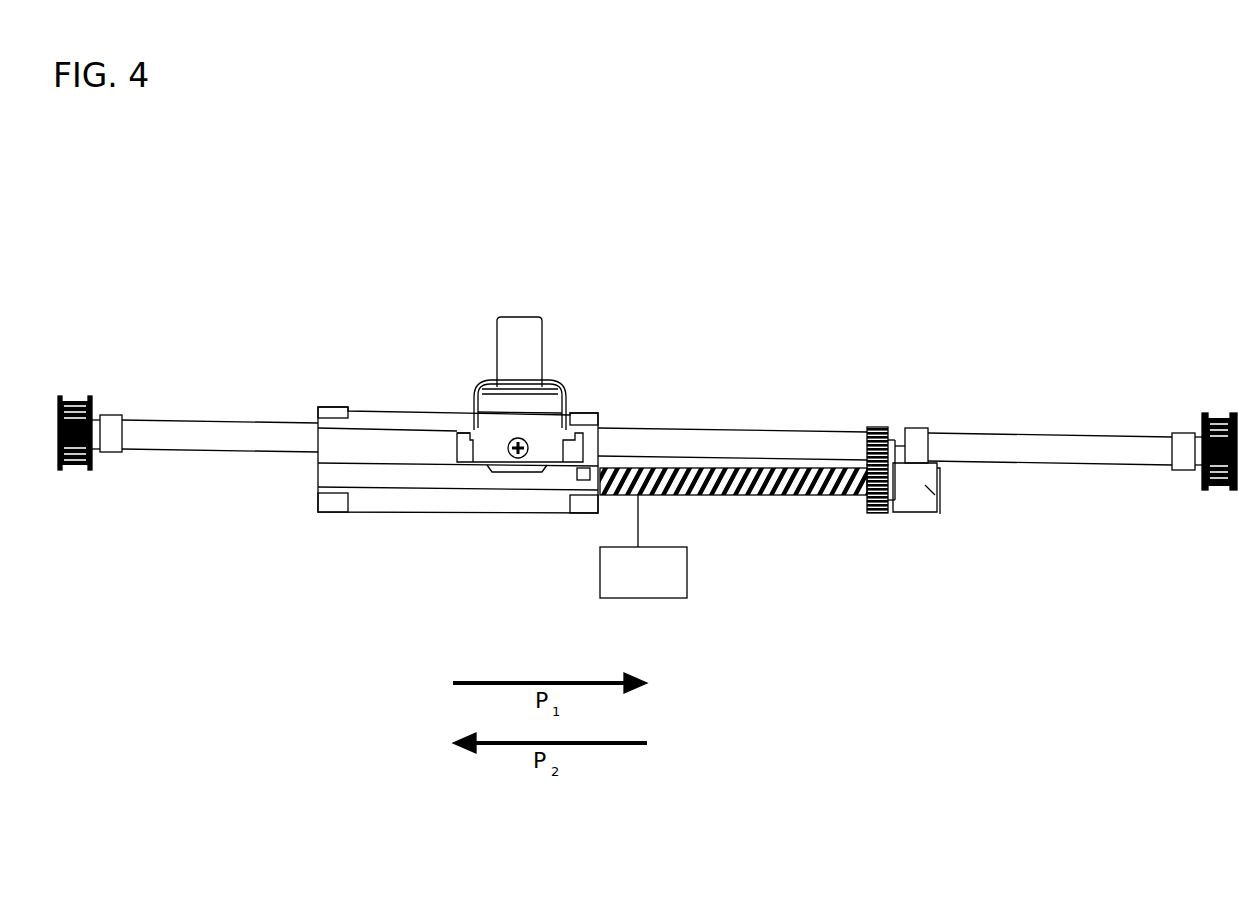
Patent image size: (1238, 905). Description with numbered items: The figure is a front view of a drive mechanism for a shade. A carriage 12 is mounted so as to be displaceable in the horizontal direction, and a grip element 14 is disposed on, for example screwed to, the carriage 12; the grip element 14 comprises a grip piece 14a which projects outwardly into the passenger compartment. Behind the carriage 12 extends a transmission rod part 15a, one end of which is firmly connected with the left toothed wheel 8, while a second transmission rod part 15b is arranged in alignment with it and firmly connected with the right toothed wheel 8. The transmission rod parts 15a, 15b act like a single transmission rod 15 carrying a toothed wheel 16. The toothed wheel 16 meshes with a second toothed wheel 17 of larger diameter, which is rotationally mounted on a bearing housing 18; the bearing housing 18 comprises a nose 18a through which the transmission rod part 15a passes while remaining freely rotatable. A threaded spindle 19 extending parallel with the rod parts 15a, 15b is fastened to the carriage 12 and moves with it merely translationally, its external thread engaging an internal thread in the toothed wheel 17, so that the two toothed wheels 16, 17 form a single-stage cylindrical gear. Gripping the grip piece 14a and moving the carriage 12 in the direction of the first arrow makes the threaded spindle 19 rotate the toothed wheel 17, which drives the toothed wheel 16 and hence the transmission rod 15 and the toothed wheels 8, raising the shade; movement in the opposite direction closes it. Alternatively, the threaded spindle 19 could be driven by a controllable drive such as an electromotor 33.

The toothed wheel 8 is at (1220, 413).
The carriage 12 is at (508, 514).
The grip element 14 is at (531, 427).
The grip piece 14a is at (525, 345).
The transmission rod 15 is at (727, 410).
The transmission rod part 15a is at (218, 425).
The second transmission rod part 15b is at (1015, 445).
The toothed wheel 16 is at (872, 427).
The second toothed wheel 17 is at (878, 510).
The bearing housing 18 is at (925, 485).
The nose 18a is at (917, 440).
The threaded spindle 19 is at (722, 488).
The electromotor 33 is at (633, 598).